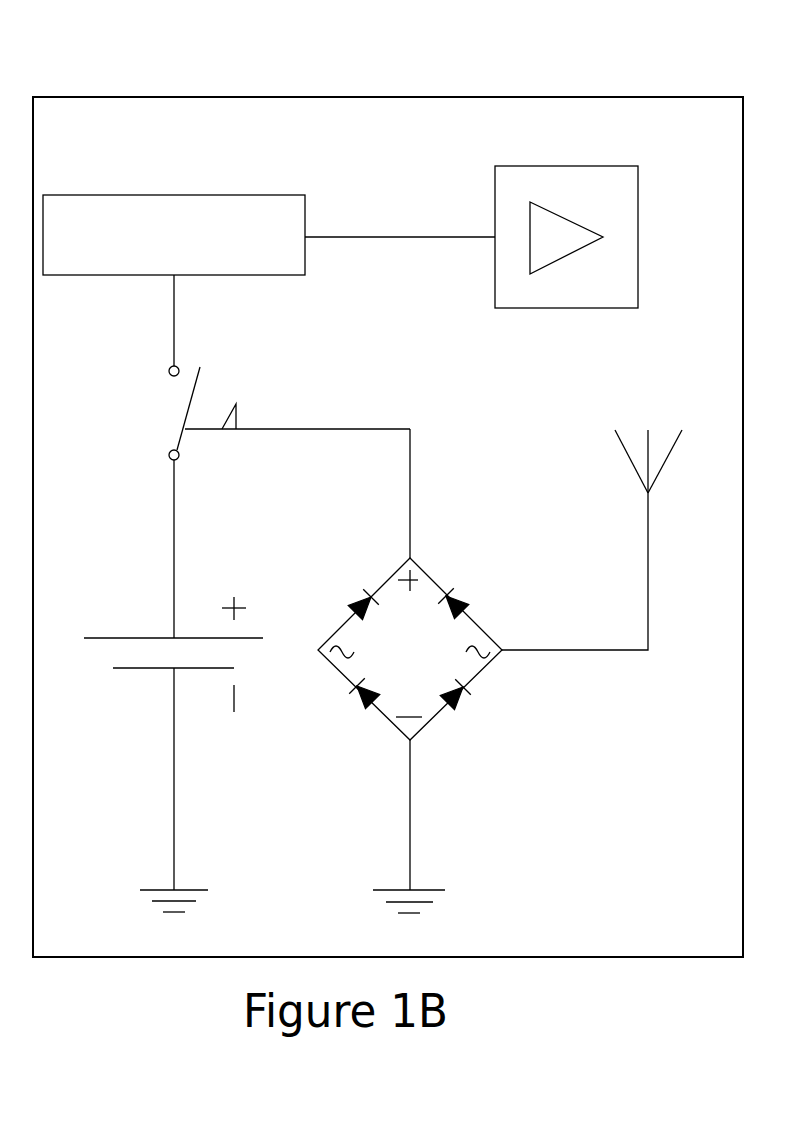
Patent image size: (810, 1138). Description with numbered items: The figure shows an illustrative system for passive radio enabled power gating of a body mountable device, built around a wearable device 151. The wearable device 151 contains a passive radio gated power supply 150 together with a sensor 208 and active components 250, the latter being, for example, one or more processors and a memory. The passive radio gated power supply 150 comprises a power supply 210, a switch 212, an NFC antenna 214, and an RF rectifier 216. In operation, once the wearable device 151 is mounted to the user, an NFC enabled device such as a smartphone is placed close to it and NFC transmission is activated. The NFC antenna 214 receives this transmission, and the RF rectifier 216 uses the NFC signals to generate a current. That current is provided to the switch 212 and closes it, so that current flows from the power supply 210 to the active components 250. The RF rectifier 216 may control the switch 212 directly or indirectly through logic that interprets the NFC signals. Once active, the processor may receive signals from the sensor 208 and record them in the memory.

The passive radio gated power supply 150 is at (155, 91).
The wearable device 151 is at (523, 133).
The active components 250 is at (198, 264).
The sensor 208 is at (625, 302).
The switch 212 is at (260, 456).
The power supply 210 is at (173, 754).
The RF rectifier 216 is at (410, 671).
The NFC antenna 214 is at (592, 540).